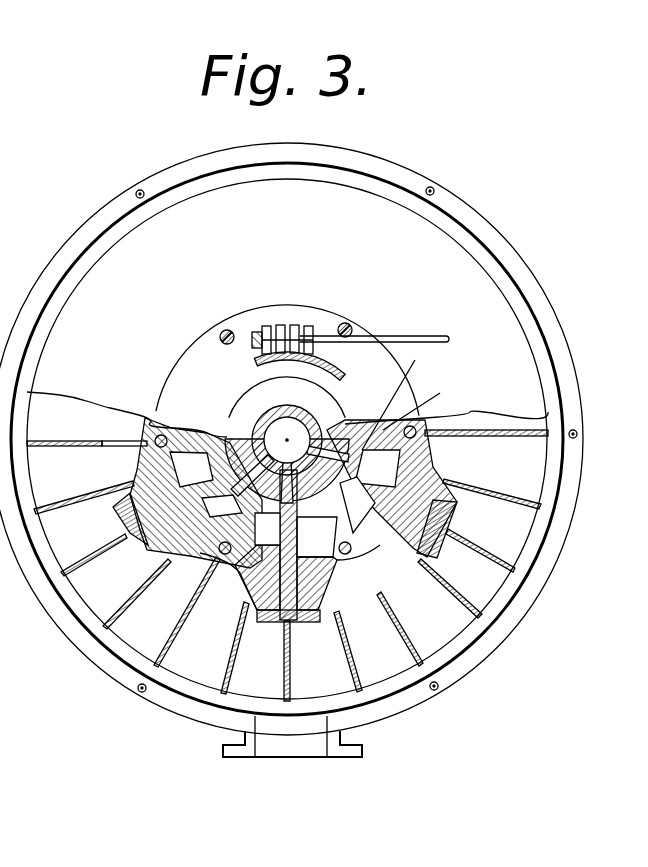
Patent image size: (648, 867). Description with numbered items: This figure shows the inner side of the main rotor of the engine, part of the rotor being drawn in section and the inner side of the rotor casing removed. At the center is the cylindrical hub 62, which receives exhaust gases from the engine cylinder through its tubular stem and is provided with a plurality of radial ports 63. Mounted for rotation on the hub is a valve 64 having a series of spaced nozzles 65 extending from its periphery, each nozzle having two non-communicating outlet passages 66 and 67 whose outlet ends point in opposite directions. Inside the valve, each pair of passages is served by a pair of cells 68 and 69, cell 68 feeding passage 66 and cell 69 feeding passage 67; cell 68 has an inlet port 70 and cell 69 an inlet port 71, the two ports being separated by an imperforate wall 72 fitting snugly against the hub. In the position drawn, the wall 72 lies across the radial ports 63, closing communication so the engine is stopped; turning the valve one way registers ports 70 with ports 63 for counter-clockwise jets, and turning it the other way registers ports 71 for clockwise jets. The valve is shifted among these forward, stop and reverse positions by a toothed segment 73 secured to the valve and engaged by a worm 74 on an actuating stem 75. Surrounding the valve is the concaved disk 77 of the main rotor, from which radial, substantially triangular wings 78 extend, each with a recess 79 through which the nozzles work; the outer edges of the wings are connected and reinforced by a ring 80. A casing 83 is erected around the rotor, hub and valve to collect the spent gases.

The hub 62 is at (343, 447).
The radial ports 63 is at (232, 425).
The valve 64 is at (425, 400).
The nozzles 65 is at (118, 516).
The outlet passage 66 is at (440, 480).
The outlet passage 67 is at (405, 556).
The cell 68 is at (285, 490).
The cell 69 is at (357, 596).
The inlet port 70 is at (399, 403).
The inlet port 71 is at (294, 481).
The imperforate wall 72 is at (372, 520).
The toothed segment 73 is at (322, 360).
The worm 74 is at (268, 330).
The actuating stem 75 is at (376, 335).
The concaved disk 77 is at (540, 470).
The wings 78 is at (510, 530).
The recess 79 is at (475, 416).
The ring 80 is at (287, 439).
The casing 83 is at (518, 270).